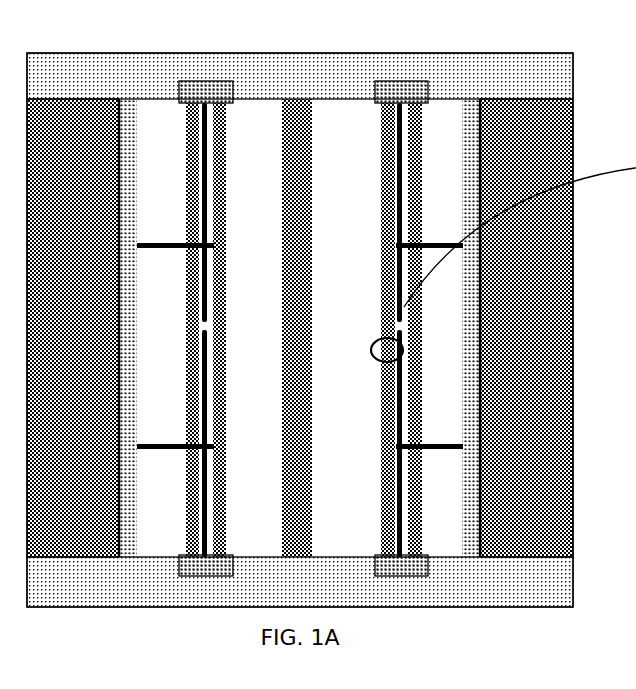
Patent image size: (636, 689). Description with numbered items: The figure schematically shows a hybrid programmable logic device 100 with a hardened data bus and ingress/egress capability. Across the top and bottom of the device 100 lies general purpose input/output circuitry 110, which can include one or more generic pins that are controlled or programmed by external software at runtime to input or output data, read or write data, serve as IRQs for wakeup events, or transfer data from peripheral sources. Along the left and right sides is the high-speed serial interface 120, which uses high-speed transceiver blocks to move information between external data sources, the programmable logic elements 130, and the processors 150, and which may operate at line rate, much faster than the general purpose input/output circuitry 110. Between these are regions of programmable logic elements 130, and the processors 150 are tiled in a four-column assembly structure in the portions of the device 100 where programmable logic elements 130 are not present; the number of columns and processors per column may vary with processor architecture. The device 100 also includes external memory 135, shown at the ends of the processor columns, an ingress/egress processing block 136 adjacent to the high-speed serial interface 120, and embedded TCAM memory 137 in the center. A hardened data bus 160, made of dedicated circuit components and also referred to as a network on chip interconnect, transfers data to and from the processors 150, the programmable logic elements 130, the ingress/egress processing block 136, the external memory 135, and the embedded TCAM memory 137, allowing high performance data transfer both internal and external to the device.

The hybrid programmable logic device 100 is at (284, 31).
The general purpose input/output circuitry 110 is at (284, 84).
The high-speed serial interface 120 is at (58, 339).
The programmable logic elements 130 is at (146, 155).
The external memory 135 is at (303, 328).
The ingress/egress processing block 136 is at (300, 328).
The embedded TCAM memory 137 is at (297, 328).
The processors 150 is at (194, 473).
The hardened data bus 160 is at (142, 243).